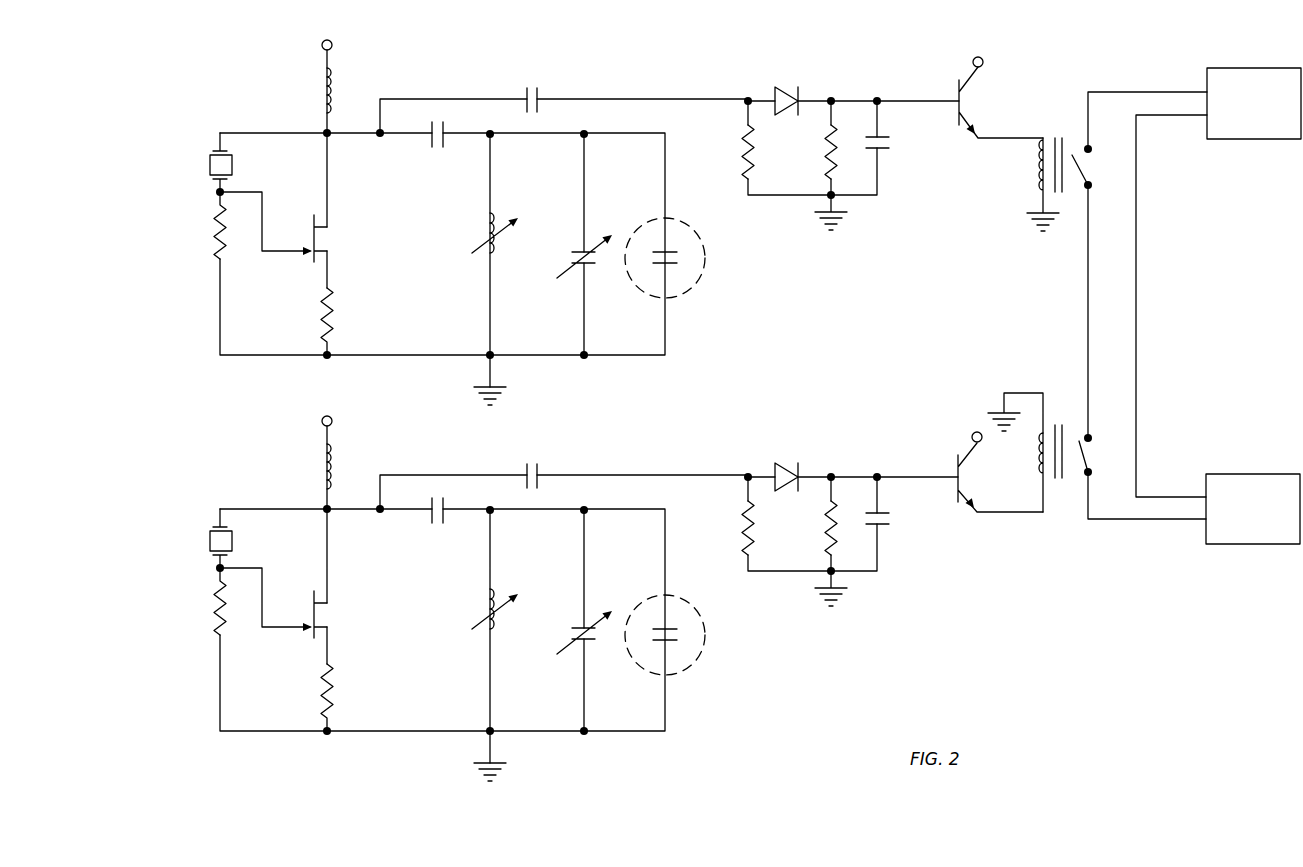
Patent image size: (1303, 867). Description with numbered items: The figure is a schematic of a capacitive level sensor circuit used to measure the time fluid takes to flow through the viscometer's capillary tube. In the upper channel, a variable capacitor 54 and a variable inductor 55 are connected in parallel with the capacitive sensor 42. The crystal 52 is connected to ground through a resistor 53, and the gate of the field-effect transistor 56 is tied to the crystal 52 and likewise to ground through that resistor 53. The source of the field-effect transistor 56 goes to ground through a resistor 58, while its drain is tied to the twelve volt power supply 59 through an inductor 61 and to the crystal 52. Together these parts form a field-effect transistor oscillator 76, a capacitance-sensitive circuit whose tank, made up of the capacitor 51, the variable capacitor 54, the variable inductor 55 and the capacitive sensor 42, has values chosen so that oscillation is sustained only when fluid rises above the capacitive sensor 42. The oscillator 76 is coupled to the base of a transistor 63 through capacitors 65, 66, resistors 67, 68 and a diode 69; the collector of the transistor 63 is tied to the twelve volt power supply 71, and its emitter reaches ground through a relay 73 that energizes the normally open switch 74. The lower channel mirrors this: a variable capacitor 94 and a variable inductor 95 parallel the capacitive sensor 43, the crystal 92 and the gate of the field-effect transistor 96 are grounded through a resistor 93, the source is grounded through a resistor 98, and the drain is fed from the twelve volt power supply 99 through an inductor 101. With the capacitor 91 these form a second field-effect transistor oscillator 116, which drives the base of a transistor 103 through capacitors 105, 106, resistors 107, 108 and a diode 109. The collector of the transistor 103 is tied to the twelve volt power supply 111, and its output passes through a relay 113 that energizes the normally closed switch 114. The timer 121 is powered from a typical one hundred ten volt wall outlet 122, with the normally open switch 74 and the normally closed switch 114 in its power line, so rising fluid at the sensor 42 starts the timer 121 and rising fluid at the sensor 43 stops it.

The capacitive sensor 42 is at (706, 258).
The capacitive sensor 43 is at (706, 635).
The capacitor 51 is at (428, 140).
The crystal 52 is at (234, 165).
The resistor 53 is at (215, 235).
The variable capacitor 54 is at (592, 268).
The variable inductor 55 is at (487, 225).
The field-effect transistor 56 is at (312, 258).
The resistor 58 is at (335, 320).
The +12 volt power supply 59 is at (321, 45).
The inductor 61 is at (324, 90).
The transistor 63 is at (955, 90).
The capacitor 65 is at (540, 88).
The capacitor 66 is at (890, 150).
The resistor 67 is at (745, 158).
The resistor 68 is at (828, 152).
The diode 69 is at (785, 87).
The +12 volt power supply 71 is at (983, 68).
The relay 73 is at (1036, 166).
The normally open switch 74 is at (1084, 168).
The field-effect transistor oscillator 76 is at (200, 326).
The capacitor 91 is at (428, 516).
The crystal 92 is at (234, 541).
The resistor 93 is at (213, 611).
The variable capacitor 94 is at (590, 644).
The variable inductor 95 is at (487, 604).
The field-effect transistor 96 is at (312, 634).
The resistor 98 is at (335, 696).
The +12 volt power supply 99 is at (321, 421).
The inductor 101 is at (324, 466).
The transistor 103 is at (955, 468).
The capacitor 105 is at (540, 464).
The capacitor 106 is at (890, 527).
The resistor 107 is at (745, 524).
The resistor 108 is at (828, 518).
The diode 109 is at (785, 463).
The +12 volt power supply 111 is at (976, 431).
The relay 113 is at (1038, 452).
The normally closed switch 114 is at (1086, 455).
The field-effect transistor oscillator 116 is at (203, 696).
The timer 121 is at (1245, 139).
The 110 volt wall outlet 122 is at (1250, 544).